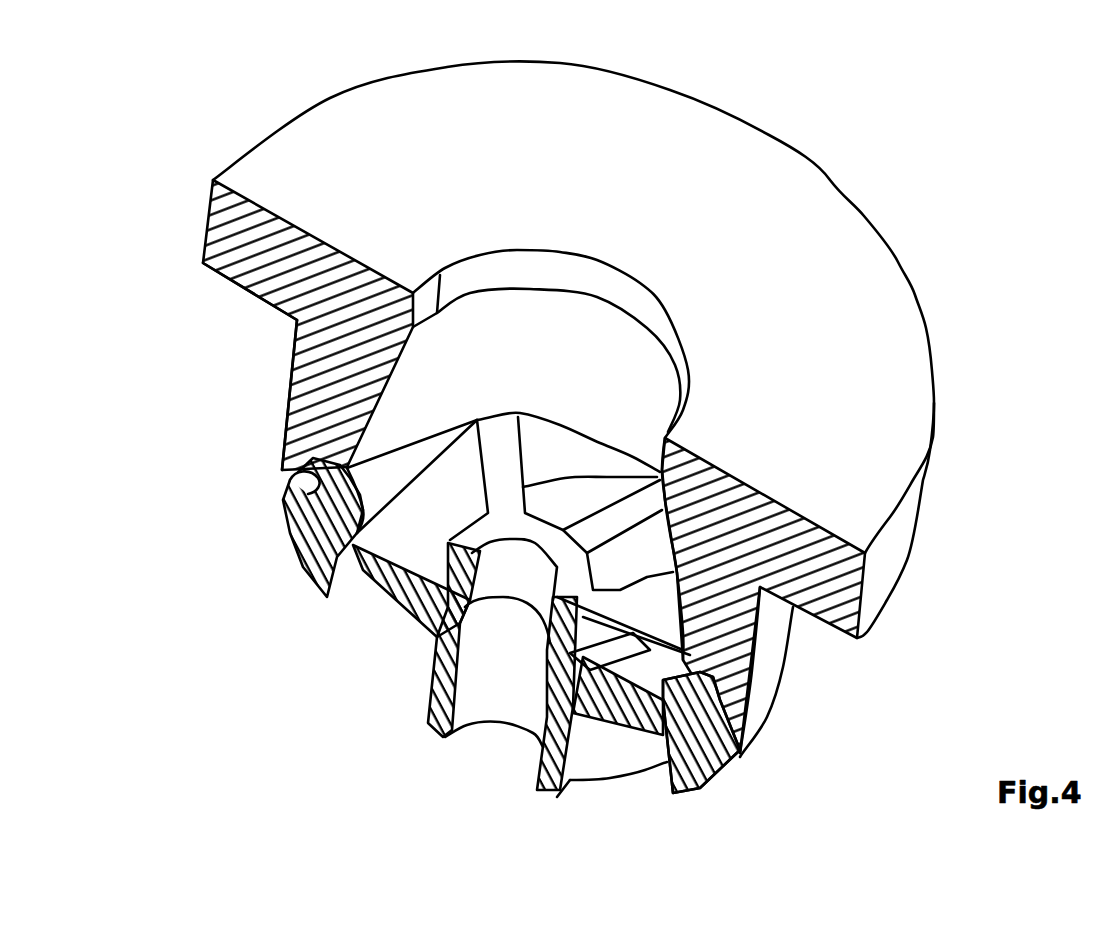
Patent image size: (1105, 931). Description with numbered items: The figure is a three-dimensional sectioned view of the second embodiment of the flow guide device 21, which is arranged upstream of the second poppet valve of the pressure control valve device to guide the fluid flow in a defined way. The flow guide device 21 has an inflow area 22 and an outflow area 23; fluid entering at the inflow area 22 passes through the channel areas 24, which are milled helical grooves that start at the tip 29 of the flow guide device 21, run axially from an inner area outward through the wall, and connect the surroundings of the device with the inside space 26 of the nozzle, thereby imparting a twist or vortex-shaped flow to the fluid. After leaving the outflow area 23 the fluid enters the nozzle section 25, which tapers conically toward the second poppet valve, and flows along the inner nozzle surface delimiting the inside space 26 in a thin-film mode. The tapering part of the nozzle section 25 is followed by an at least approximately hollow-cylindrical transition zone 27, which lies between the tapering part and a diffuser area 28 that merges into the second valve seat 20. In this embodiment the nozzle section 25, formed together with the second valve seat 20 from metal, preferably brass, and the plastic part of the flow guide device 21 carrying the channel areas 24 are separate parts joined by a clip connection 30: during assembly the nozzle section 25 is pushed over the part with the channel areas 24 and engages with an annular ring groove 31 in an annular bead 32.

The second valve seat 20 is at (530, 260).
The flow guide device 21 is at (169, 178).
The inflow area 22 is at (412, 693).
The outflow area 23 is at (475, 477).
The channel areas 24 is at (394, 540).
The nozzle section 25 is at (294, 369).
The inside space of the nozzle 26 is at (580, 339).
The transition zone 27 is at (437, 283).
The diffuser area 28 is at (472, 283).
The tip 29 is at (543, 785).
The clip connection 30 is at (287, 497).
The annular ring groove 31 is at (297, 473).
The annular bead 32 is at (693, 790).